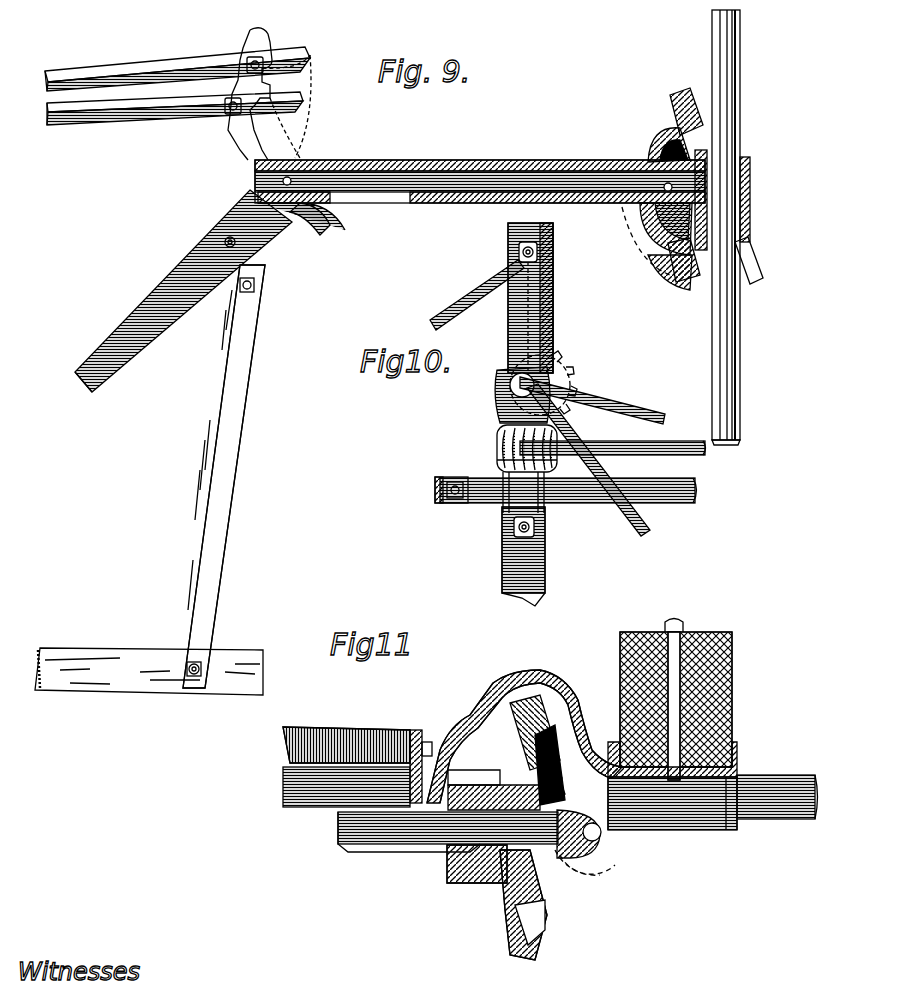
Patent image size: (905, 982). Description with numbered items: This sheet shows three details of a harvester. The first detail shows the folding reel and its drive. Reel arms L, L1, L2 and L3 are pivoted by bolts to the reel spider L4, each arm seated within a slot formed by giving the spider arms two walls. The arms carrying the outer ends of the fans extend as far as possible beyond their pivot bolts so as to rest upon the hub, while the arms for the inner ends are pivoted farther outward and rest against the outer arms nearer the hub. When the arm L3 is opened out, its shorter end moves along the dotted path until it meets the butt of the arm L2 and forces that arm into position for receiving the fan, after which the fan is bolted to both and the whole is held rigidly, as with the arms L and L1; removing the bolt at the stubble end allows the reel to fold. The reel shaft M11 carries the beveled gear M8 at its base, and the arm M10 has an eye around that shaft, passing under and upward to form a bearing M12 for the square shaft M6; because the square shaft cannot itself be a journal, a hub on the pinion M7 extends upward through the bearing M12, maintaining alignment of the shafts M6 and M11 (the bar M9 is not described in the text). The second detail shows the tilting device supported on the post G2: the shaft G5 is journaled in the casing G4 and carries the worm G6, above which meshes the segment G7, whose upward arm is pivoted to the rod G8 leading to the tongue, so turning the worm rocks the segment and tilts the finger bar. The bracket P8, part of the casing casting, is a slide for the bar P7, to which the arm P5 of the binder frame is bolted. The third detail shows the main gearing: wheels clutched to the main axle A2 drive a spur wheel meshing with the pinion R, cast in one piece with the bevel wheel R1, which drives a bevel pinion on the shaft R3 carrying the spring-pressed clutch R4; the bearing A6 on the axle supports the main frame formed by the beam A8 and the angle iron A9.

In FIG. 9, the reel arm L is at (238, 402).
In FIG. 9, the reel arm L1 is at (158, 318).
In FIG. 9, the reel arm L2 is at (168, 131).
In FIG. 9, the reel arm L3 is at (132, 74).
In FIG. 9, the reel spider L4 is at (305, 215).
In FIG. 9, the shaft M6 is at (732, 112).
In FIG. 9, the pinion M7 is at (748, 282).
In FIG. 9, the beveled gear M8 is at (660, 134).
In FIG. 9, the horizontal bar M9 is at (503, 175).
In FIG. 9, the arm M10 is at (623, 232).
In FIG. 9, the reel shaft M11 is at (585, 188).
In FIG. 9, the bearing M12 is at (750, 216).
In FIG. 10, the post G2 is at (543, 235).
In FIG. 10, the casing G4 is at (497, 460).
In FIG. 10, the shaft G5 is at (605, 450).
In FIG. 10, the worm G6 is at (497, 435).
In FIG. 10, the segment G7 is at (570, 386).
In FIG. 10, the rod G8 is at (468, 300).
In FIG. 10, the arm P5 is at (440, 503).
In FIG. 10, the bar P7 is at (676, 500).
In FIG. 10, the bracket P8 is at (548, 508).
In FIG. 11, the main axle A2 is at (752, 777).
In FIG. 11, the bearing A6 is at (660, 808).
In FIG. 11, the beam A8 is at (718, 715).
In FIG. 11, the angle iron A9 is at (345, 735).
In FIG. 11, the pinion R is at (448, 880).
In FIG. 11, the bevel wheel R1 is at (548, 912).
In FIG. 11, the shaft R3 is at (590, 850).
In FIG. 11, the clutch R4 is at (605, 862).